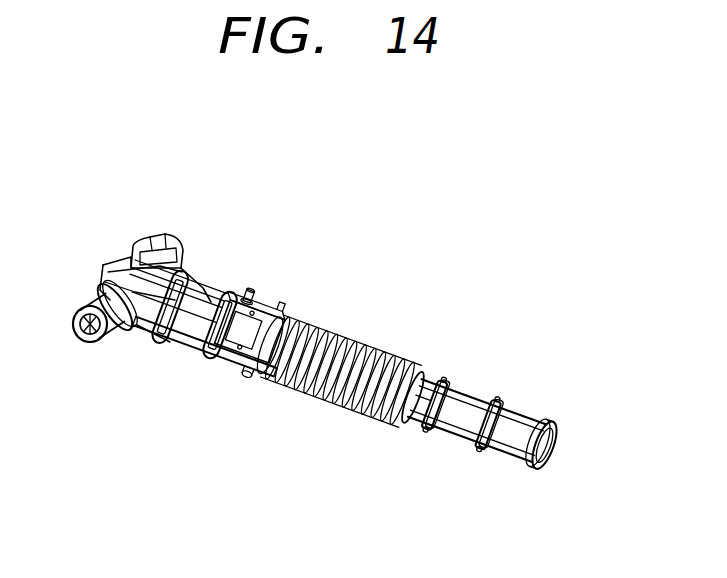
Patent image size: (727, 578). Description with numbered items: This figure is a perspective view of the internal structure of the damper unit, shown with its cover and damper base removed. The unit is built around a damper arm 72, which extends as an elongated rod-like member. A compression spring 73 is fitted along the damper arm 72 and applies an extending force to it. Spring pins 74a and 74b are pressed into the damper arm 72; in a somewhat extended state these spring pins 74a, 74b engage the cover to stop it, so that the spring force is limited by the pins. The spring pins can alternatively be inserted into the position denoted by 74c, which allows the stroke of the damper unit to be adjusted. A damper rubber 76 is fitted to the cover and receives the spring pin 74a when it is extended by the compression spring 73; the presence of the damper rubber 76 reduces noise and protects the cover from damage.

The damper arm 72 is at (451, 428).
The compression spring 73 is at (373, 341).
The spring pin 74a is at (251, 288).
The spring pin 74b is at (247, 379).
The spring pin insertion position 74c is at (282, 300).
The damper rubber 76 is at (150, 238).